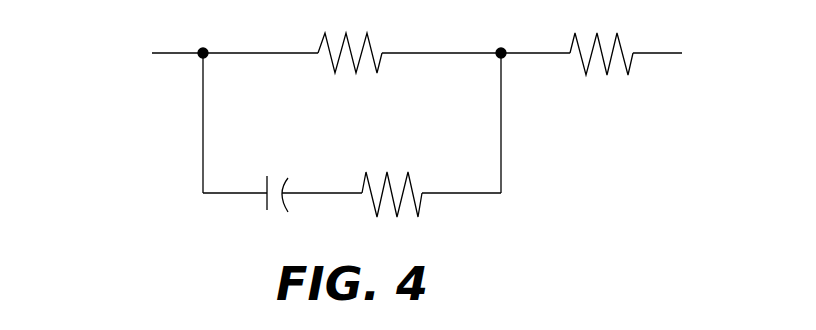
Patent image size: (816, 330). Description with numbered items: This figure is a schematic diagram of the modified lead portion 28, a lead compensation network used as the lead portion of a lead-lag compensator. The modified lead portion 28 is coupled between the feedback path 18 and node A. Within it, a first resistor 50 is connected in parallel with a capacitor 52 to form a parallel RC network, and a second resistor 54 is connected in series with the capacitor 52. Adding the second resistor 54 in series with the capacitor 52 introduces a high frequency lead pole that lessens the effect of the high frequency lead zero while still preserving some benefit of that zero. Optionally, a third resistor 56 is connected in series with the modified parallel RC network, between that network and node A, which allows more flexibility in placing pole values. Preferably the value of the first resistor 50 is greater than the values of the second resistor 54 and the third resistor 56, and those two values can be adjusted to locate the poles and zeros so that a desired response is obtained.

The feedback path 18 is at (130, 60).
The modified lead portion 28 is at (553, 155).
The resistor R3 50 is at (370, 48).
The capacitor C3 52 is at (273, 217).
The second resistor R4 54 is at (397, 207).
The third resistor R5 56 is at (607, 75).